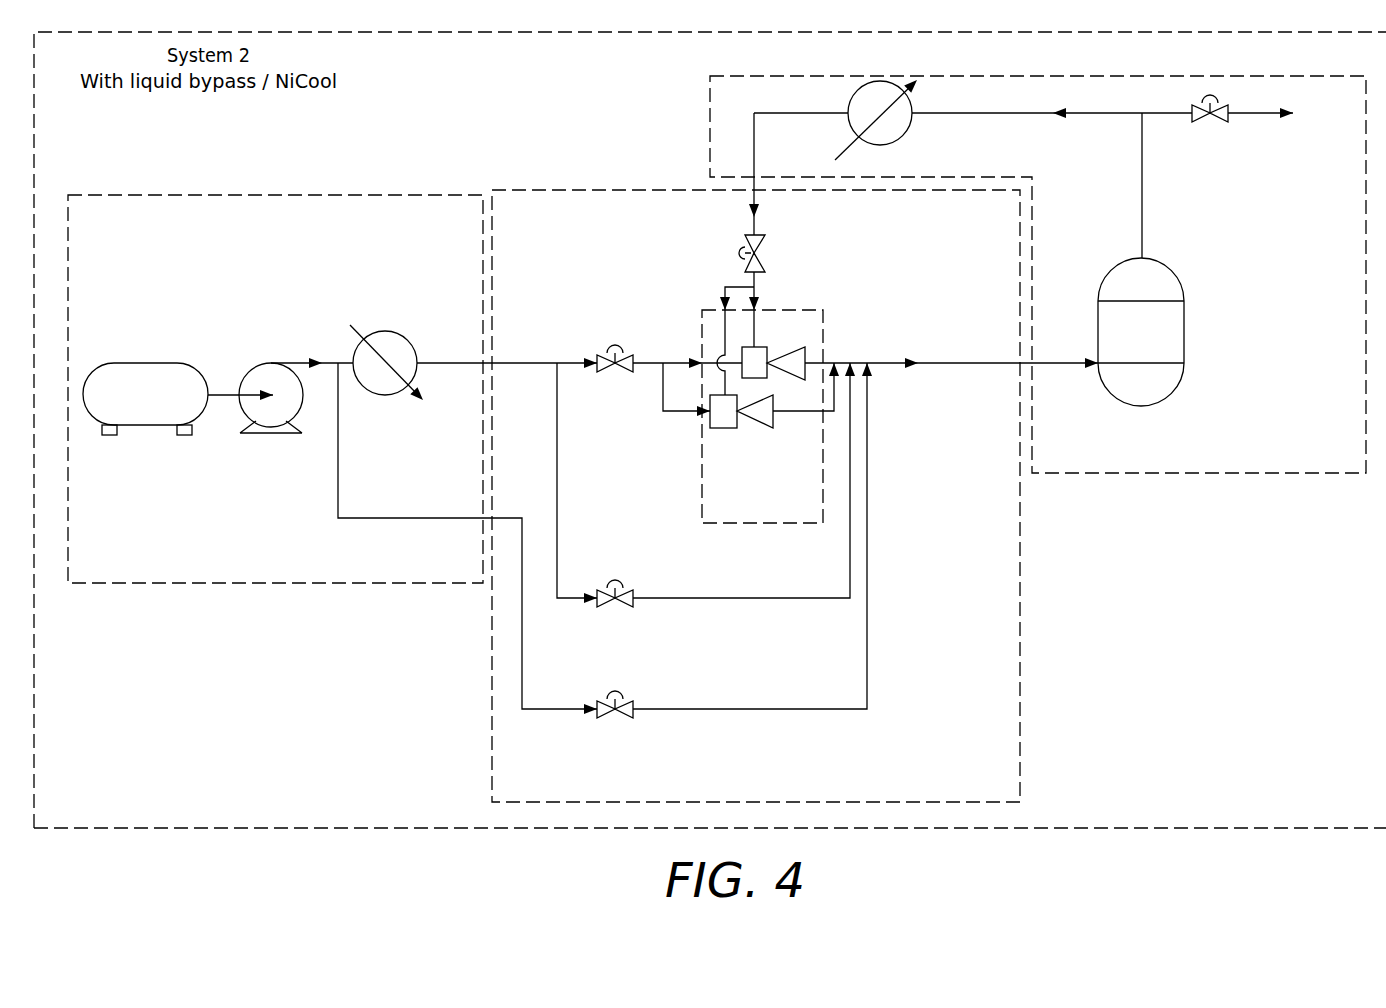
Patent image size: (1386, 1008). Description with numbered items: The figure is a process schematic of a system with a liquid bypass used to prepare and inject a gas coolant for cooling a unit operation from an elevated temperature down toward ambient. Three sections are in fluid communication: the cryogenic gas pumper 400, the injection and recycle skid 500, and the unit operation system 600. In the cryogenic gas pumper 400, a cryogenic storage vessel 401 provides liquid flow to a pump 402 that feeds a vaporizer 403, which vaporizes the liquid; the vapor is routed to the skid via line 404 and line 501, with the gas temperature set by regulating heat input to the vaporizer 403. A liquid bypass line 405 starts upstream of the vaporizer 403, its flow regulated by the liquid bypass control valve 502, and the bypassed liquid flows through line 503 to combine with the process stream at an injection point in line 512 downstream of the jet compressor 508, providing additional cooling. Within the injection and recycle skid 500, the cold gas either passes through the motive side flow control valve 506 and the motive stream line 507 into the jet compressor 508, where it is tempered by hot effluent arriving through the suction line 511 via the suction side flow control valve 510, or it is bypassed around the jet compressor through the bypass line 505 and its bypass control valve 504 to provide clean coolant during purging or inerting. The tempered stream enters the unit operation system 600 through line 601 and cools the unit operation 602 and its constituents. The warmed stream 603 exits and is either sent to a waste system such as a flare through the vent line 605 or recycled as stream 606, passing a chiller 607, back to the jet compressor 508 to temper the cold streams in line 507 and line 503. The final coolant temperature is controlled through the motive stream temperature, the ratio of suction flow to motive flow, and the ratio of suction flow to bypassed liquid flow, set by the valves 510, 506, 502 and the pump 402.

The cryogenic gas pumper 400 is at (403, 231).
The cryogenic storage vessel 401 is at (147, 373).
The pump 402 is at (255, 368).
The vaporizer 403 is at (385, 337).
The line 404 is at (447, 362).
The liquid bypass line 405 is at (375, 520).
The injection and recycle skid 500 is at (940, 791).
The line 501 is at (523, 362).
The liquid bypass control valve 502 is at (605, 702).
The line 503 is at (735, 708).
The bypass control valve 504 is at (627, 590).
The bypass line 505 is at (735, 597).
The motive side flow control valve 506 is at (603, 348).
The motive stream line 507 is at (668, 362).
The jet compressor 508 is at (782, 514).
The suction side flow control valve 510 is at (745, 266).
The hot effluent suction line 511 is at (750, 205).
The process stream line 512 is at (877, 362).
The unit operation system 600 is at (1275, 462).
The line 601 is at (1057, 357).
The unit operation 602 is at (1158, 334).
The warmed stream 603 is at (1142, 233).
The vent line 605 is at (1270, 127).
The recycle stream 606 is at (1095, 117).
The chiller 607 is at (850, 99).